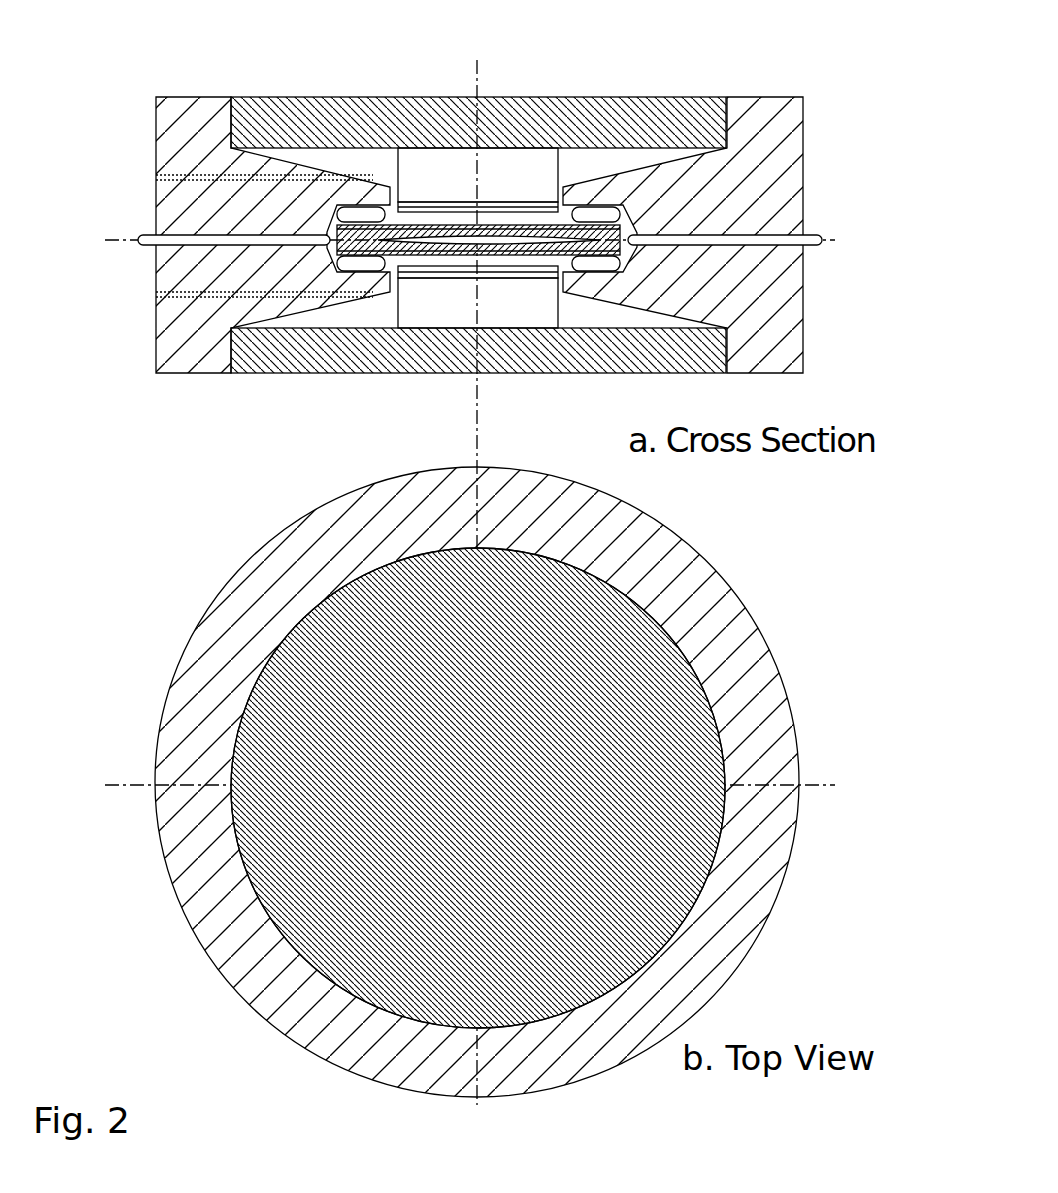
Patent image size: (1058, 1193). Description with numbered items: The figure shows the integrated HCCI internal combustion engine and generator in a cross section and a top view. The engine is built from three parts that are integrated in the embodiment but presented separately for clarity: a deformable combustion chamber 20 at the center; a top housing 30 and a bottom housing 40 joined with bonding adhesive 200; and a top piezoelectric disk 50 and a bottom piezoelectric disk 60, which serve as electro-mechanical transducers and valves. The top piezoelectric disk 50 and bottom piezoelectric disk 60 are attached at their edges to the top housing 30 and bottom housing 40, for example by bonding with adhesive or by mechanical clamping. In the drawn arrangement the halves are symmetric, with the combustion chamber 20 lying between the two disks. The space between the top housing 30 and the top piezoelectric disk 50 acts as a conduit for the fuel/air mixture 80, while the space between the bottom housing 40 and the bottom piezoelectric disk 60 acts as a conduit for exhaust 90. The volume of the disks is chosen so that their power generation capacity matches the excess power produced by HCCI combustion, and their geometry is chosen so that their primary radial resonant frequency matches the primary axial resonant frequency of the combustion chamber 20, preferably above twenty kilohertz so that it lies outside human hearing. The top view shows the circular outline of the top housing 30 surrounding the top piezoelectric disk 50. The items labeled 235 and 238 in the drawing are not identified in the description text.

The deformable combustion chamber 20 is at (628, 237).
The top housing 30 is at (748, 157).
The bottom housing 40 is at (750, 360).
The top piezoelectric disk 50 is at (627, 100).
The bottom piezoelectric disk 60 is at (630, 347).
The fuel/air mixture conduit 80 is at (192, 175).
The exhaust conduit 90 is at (192, 298).
The bonding adhesive 200 is at (167, 233).
The upper spacer 235 is at (387, 167).
The lower spacer 238 is at (382, 303).